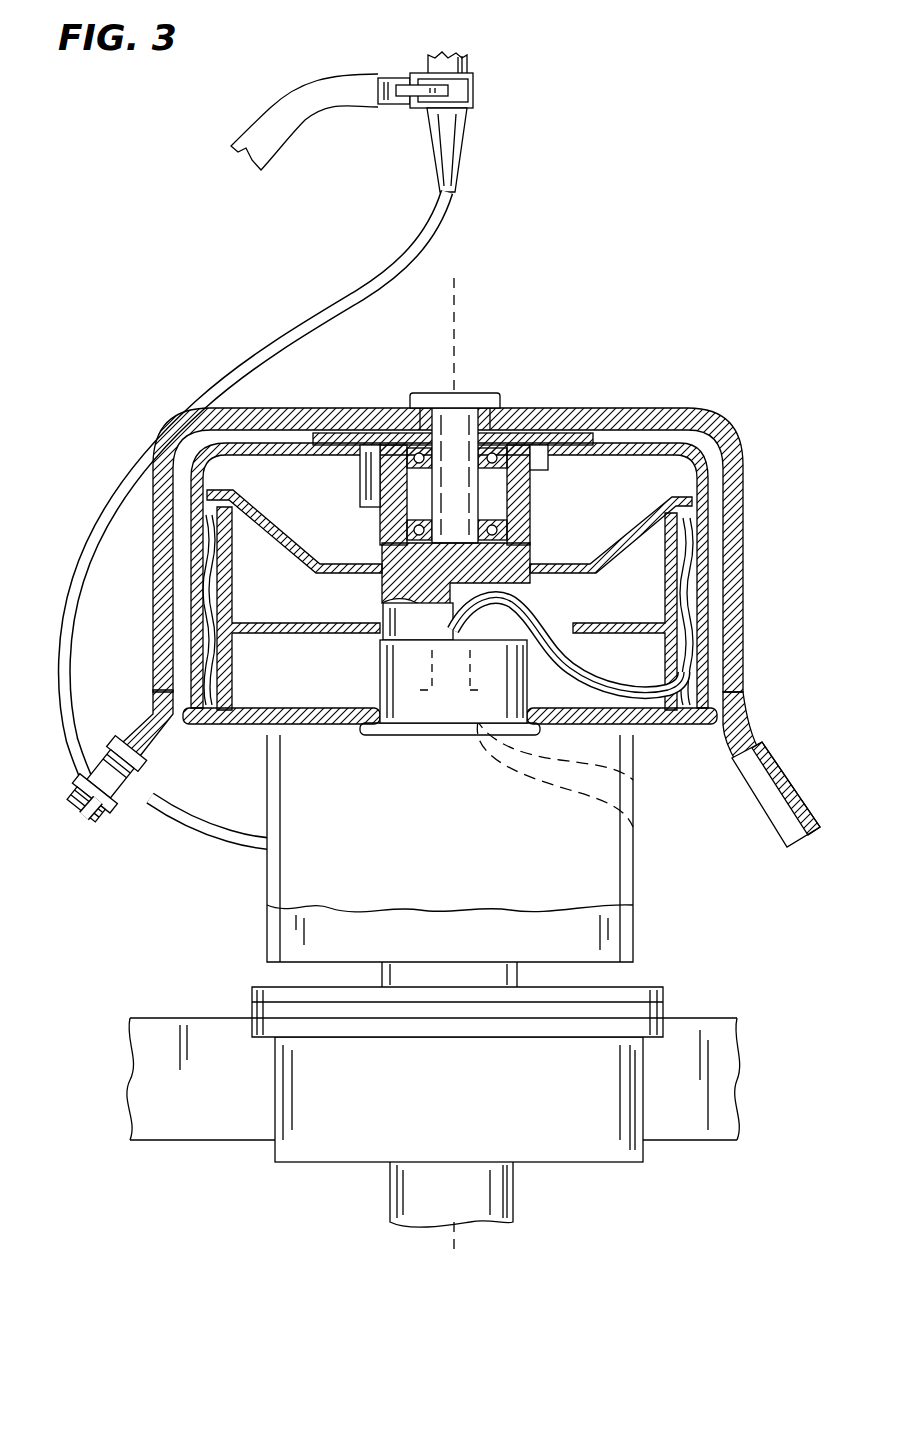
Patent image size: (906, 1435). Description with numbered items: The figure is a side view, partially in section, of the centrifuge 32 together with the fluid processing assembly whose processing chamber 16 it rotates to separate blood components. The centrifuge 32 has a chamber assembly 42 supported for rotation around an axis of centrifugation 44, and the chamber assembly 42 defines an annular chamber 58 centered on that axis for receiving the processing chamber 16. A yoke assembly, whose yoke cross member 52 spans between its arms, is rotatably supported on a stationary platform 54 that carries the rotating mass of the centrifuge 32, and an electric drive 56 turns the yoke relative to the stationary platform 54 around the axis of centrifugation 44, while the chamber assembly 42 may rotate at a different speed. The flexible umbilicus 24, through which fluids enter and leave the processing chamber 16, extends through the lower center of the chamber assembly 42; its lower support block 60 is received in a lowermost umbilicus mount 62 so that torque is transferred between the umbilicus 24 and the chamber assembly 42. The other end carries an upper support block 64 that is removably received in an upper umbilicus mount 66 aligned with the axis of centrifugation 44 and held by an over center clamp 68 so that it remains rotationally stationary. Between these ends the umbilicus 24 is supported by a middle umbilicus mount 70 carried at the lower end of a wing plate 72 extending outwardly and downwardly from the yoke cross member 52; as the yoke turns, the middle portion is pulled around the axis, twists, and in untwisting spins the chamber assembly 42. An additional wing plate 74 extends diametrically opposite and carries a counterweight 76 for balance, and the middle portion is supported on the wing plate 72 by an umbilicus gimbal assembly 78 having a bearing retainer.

The processing chamber 16 is at (692, 633).
The umbilicus 24 is at (302, 330).
The centrifuge 32 is at (658, 372).
The chamber assembly 42 is at (695, 460).
The axis of centrifugation 44 is at (460, 337).
The yoke cross member 52 is at (376, 400).
The stationary platform 54 is at (700, 1145).
The electric drive 56 is at (585, 1145).
The annular chamber 58 is at (692, 557).
The lower support block 60 is at (634, 780).
The lowermost umbilicus mount 62 is at (634, 827).
The upper support block 64 is at (470, 63).
The upper umbilicus mount 66 is at (376, 73).
The over center clamp 68 is at (474, 92).
The middle umbilicus mount 70 is at (86, 793).
The wing plate 72 is at (153, 722).
The additional wing plate 74 is at (747, 705).
The counterweight 76 is at (780, 818).
The umbilicus gimbal assembly 78 is at (108, 838).